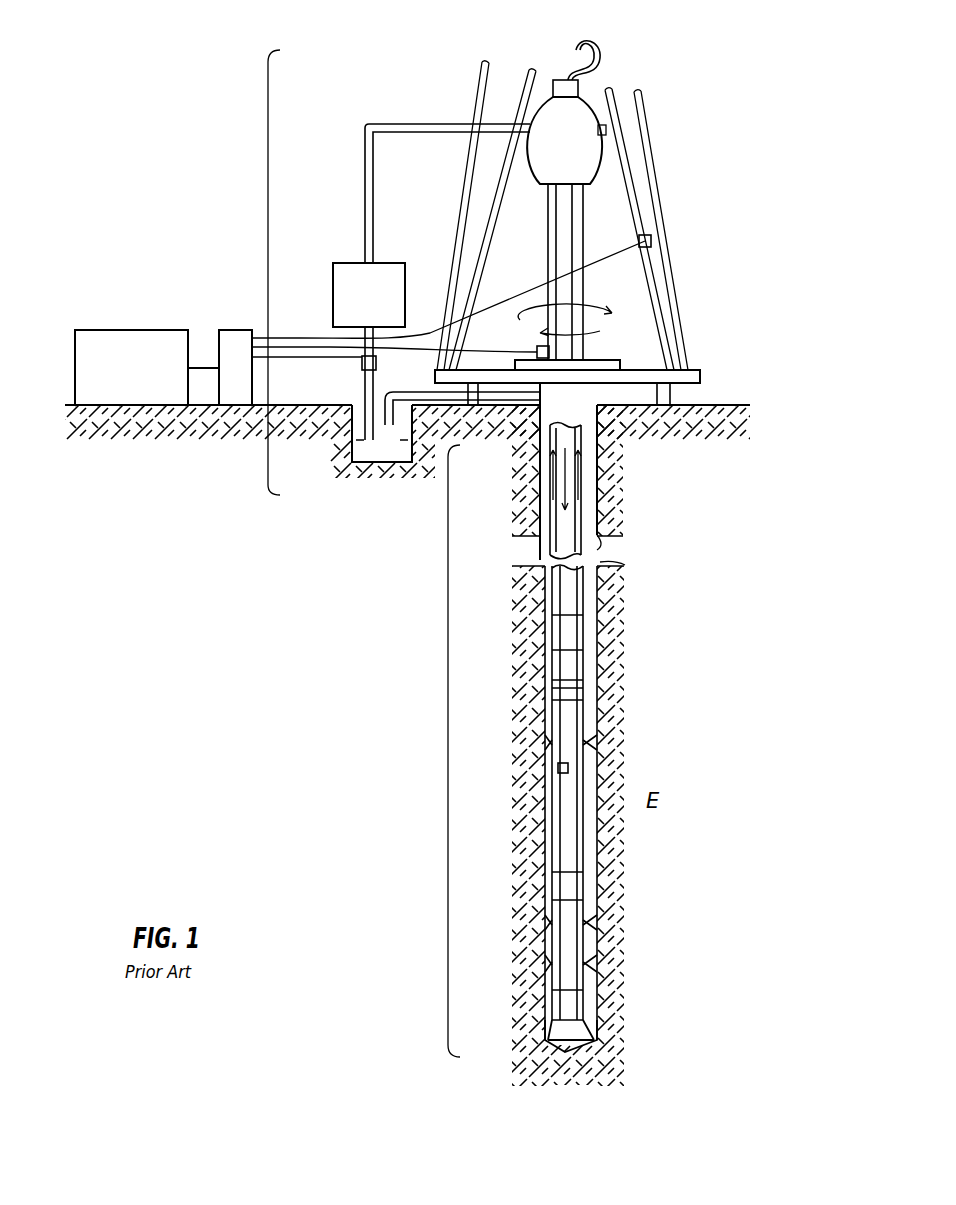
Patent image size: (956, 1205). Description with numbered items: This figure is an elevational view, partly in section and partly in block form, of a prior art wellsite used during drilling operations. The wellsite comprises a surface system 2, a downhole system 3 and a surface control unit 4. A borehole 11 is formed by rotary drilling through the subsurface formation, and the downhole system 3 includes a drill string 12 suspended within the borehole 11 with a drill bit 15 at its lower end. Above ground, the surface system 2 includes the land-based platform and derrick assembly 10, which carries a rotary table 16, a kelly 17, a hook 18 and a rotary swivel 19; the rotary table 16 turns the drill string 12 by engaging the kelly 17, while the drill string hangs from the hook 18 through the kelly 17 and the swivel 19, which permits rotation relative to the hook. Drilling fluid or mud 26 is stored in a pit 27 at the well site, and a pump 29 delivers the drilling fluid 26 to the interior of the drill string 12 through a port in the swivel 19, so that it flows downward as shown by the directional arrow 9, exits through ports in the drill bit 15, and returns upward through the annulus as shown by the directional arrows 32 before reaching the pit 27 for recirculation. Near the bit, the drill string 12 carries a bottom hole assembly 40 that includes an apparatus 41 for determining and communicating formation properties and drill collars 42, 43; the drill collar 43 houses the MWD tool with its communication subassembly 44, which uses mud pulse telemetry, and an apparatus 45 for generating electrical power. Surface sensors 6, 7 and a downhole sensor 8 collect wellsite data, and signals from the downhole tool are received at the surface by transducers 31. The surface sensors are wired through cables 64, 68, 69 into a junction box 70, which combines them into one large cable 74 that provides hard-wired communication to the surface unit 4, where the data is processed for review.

The surface system 2 is at (268, 285).
The downhole system 3 is at (448, 744).
The surface control unit 4 is at (140, 384).
The surface sensor 6 is at (651, 240).
The surface sensor 7 is at (362, 365).
The downhole sensor 8 is at (556, 766).
The directional arrow 9 is at (553, 486).
The platform and derrick assembly 10 is at (573, 187).
The borehole 11 is at (598, 545).
The drill string 12 is at (565, 592).
The drill bit 15 is at (555, 1030).
The rotary table 16 is at (600, 360).
The kelly 17 is at (583, 209).
The hook 18 is at (570, 50).
The rotary swivel 19 is at (550, 172).
The drilling fluid 26 is at (382, 462).
The pit 27 is at (352, 440).
The pump 29 is at (348, 263).
The transducers 31 is at (615, 108).
The directional arrows 32 is at (600, 478).
The bottom hole assembly 40 is at (628, 809).
The apparatus for determining and communicating formation properties 41 is at (583, 962).
The drill collar 42 is at (565, 842).
The drill collar 43 is at (583, 647).
The communication subassembly 44 is at (552, 632).
The apparatus for generating electrical power 45 is at (552, 663).
The cable 64 is at (537, 350).
The cable 68 is at (543, 288).
The cable 69 is at (288, 357).
The junction box 70 is at (234, 330).
The cable 74 is at (206, 368).